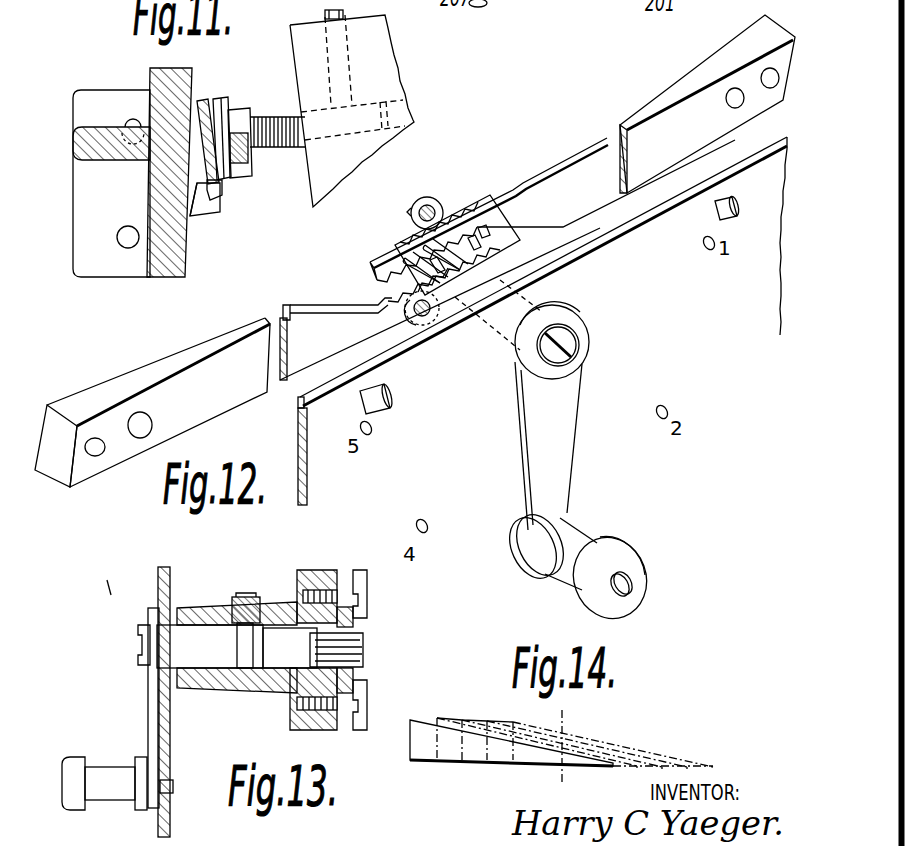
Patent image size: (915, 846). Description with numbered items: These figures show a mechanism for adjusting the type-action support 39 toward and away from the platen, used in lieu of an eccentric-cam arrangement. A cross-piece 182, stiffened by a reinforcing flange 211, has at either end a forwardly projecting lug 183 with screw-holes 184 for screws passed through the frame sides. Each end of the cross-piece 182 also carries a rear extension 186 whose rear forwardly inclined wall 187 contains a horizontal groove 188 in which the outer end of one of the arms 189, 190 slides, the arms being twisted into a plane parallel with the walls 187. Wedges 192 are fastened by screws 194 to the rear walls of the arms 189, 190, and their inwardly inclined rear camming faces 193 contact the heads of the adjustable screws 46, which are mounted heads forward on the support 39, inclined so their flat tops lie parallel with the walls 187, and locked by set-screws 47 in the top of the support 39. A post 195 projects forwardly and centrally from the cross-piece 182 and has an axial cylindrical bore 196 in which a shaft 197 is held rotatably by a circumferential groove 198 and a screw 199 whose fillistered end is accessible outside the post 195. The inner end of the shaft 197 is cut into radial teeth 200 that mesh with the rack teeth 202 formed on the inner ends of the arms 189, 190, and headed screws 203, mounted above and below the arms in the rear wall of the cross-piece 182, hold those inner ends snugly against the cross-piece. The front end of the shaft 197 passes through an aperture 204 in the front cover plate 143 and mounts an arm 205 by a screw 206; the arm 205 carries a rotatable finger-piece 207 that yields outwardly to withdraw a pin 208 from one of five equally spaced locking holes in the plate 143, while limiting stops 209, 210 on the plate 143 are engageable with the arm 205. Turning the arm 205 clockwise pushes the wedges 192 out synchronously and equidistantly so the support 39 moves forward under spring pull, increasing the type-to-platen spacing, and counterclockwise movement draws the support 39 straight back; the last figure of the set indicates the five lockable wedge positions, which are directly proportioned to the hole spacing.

In FIG. 11, the type-action support 39 is at (408, 78).
In FIG. 11, the adjustable screw 46 is at (252, 112).
In FIG. 11, the set-screw 47 is at (326, 12).
In FIG. 12, the front cover plate 143 is at (298, 414).
In FIG. 13, the front cover plate 143 is at (170, 736).
In FIG. 11, the cross-piece 182 is at (185, 260).
In FIG. 13, the cross-piece 182 is at (336, 558).
In FIG. 11, the forwardly projecting lug 183 is at (73, 200).
In FIG. 11, the screw-hole 184 is at (128, 226).
In FIG. 11, the rear extension 186 is at (203, 218).
In FIG. 11, the rear forwardly inclined wall 187 is at (222, 210).
In FIG. 11, the horizontal groove 188 is at (222, 192).
In FIG. 11, the arm 189 is at (205, 100).
In FIG. 12, the arm 189 is at (195, 406).
In FIG. 13, the arm 189 is at (354, 676).
In FIG. 12, the arm 190 is at (692, 146).
In FIG. 13, the arm 190 is at (354, 622).
In FIG. 11, the wedge 192 is at (222, 99).
In FIG. 12, the wedge 192 is at (95, 402).
In FIG. 14, the wedge 192 is at (450, 762).
In FIG. 11, the rear camming face 193 is at (236, 99).
In FIG. 12, the rear camming face 193 is at (113, 388).
In FIG. 12, the screw 194 is at (138, 436).
In FIG. 13, the post 195 is at (236, 692).
In FIG. 13, the axial cylindrical bore 196 is at (209, 648).
In FIG. 12, the shaft 197 is at (450, 328).
In FIG. 13, the shaft 197 is at (296, 653).
In FIG. 12, the circumferential groove 198 is at (498, 315).
In FIG. 13, the circumferential groove 198 is at (252, 647).
In FIG. 13, the screw 199 is at (242, 596).
In FIG. 13, the radial teeth 200 is at (363, 650).
In FIG. 12, the rack teeth 202 is at (378, 286).
In FIG. 12, the headed screw 203 is at (425, 198).
In FIG. 13, the headed screw 203 is at (367, 602).
In FIG. 12, the aperture 204 is at (548, 310).
In FIG. 12, the arm 205 is at (570, 462).
In FIG. 13, the arm 205 is at (147, 714).
In FIG. 12, the screw 206 is at (578, 337).
In FIG. 13, the screw 206 is at (138, 632).
In FIG. 12, the rotatable finger-piece 207 is at (640, 522).
In FIG. 13, the rotatable finger-piece 207 is at (94, 745).
In FIG. 13, the pin 208 is at (186, 775).
In FIG. 12, the limiting stop 209 is at (390, 398).
In FIG. 12, the limiting stop 210 is at (730, 203).
In FIG. 11, the reinforcing flange 211 is at (73, 140).